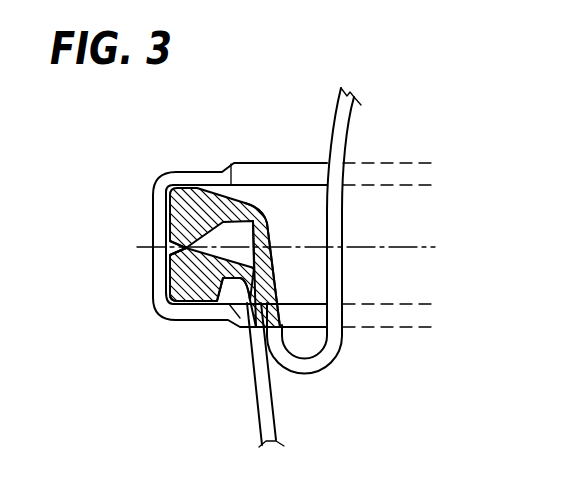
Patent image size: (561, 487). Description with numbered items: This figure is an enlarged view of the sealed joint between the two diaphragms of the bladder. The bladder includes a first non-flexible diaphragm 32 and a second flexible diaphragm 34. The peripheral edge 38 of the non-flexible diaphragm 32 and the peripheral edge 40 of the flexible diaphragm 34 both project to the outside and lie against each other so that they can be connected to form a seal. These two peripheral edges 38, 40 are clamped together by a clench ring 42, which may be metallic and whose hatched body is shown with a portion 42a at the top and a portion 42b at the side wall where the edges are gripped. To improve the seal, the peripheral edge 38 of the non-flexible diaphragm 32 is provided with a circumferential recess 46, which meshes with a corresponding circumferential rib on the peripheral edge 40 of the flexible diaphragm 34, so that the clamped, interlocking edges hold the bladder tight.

The first non-flexible diaphragm 32 is at (257, 405).
The second flexible diaphragm 34 is at (342, 137).
The peripheral edge of the first diaphragm 38 is at (200, 292).
The peripheral edge of the second diaphragm 40 is at (193, 195).
The clench ring 42 is at (152, 196).
The clip arm 42a is at (261, 188).
The clip side wall 42b is at (152, 220).
The circumferential recess 46 is at (160, 291).